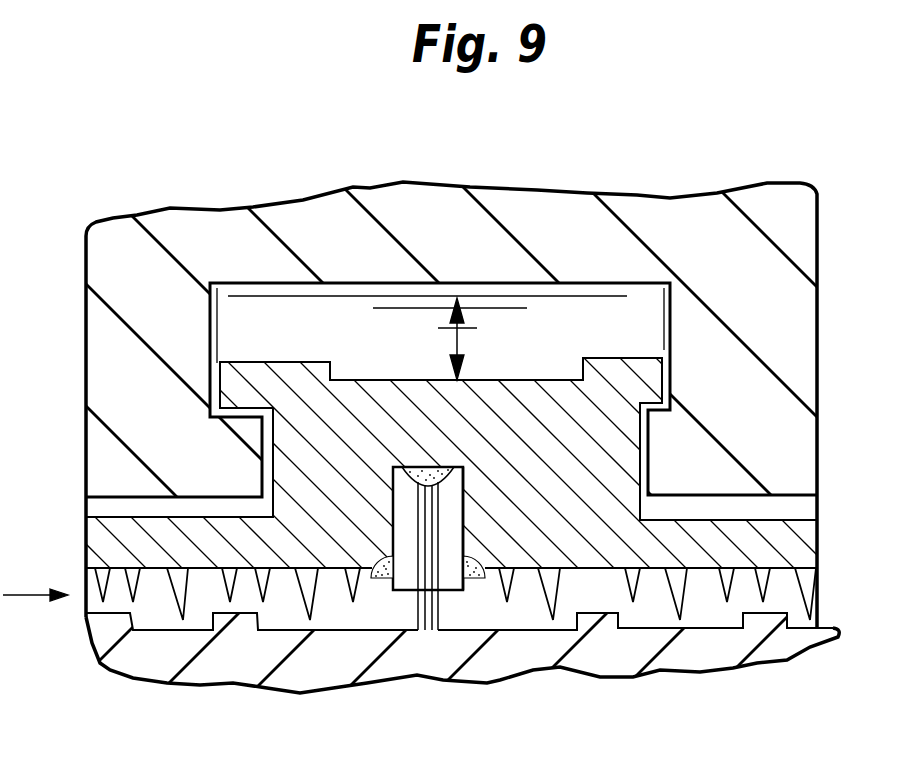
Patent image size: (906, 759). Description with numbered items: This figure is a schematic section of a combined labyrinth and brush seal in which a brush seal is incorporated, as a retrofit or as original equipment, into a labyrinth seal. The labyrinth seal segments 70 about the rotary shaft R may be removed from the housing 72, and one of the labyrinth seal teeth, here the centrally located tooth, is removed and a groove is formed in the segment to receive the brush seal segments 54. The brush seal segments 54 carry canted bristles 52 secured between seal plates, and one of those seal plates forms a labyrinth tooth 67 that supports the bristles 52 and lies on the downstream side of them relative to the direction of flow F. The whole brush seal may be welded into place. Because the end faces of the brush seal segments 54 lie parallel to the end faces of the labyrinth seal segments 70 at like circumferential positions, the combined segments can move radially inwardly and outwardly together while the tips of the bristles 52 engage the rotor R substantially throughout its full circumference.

The housing 72 is at (125, 244).
The labyrinth seal segment 70 is at (580, 440).
The brush seal segment 54 is at (402, 522).
The bristles 52 is at (438, 504).
The labyrinth tooth 67 is at (448, 577).
The rotor R is at (220, 660).
The direction of flow F is at (35, 568).